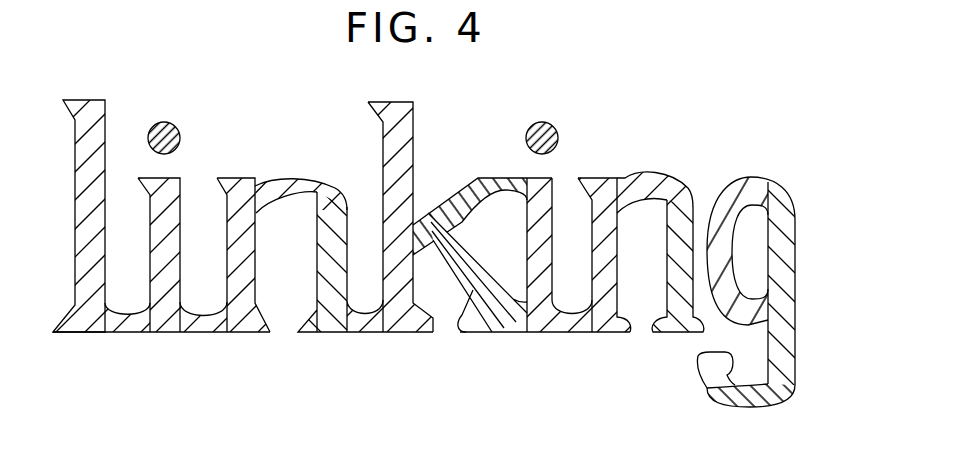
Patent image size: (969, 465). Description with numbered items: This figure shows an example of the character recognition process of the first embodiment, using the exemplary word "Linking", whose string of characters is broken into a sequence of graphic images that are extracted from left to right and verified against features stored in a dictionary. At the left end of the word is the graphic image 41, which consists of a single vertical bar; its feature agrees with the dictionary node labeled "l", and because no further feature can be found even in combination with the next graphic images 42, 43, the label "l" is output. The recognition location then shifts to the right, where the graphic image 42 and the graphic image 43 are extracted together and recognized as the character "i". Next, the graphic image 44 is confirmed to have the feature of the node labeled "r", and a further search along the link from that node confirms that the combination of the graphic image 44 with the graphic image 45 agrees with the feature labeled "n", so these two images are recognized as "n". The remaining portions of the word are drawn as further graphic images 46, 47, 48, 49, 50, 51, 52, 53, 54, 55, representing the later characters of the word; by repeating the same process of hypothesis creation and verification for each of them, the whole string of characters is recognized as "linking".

The graphic image 41 is at (93, 101).
The graphic image 42 is at (168, 123).
The graphic image 43 is at (160, 333).
The graphic image 44 is at (312, 185).
The graphic image 45 is at (323, 260).
The vertical stem of letter k 46 is at (392, 107).
The upper arm of letter k 47 is at (455, 205).
The dot of second letter i 48 is at (545, 123).
The stem of second letter i 49 is at (552, 283).
The arch of second letter n 50 is at (650, 176).
The right stem of second letter n 51 is at (676, 336).
The bowl of letter g 52 is at (758, 187).
The right wall of bowl of letter g 53 is at (787, 250).
The descender stem of letter g 54 is at (787, 360).
The lower loop of letter g 55 is at (758, 404).